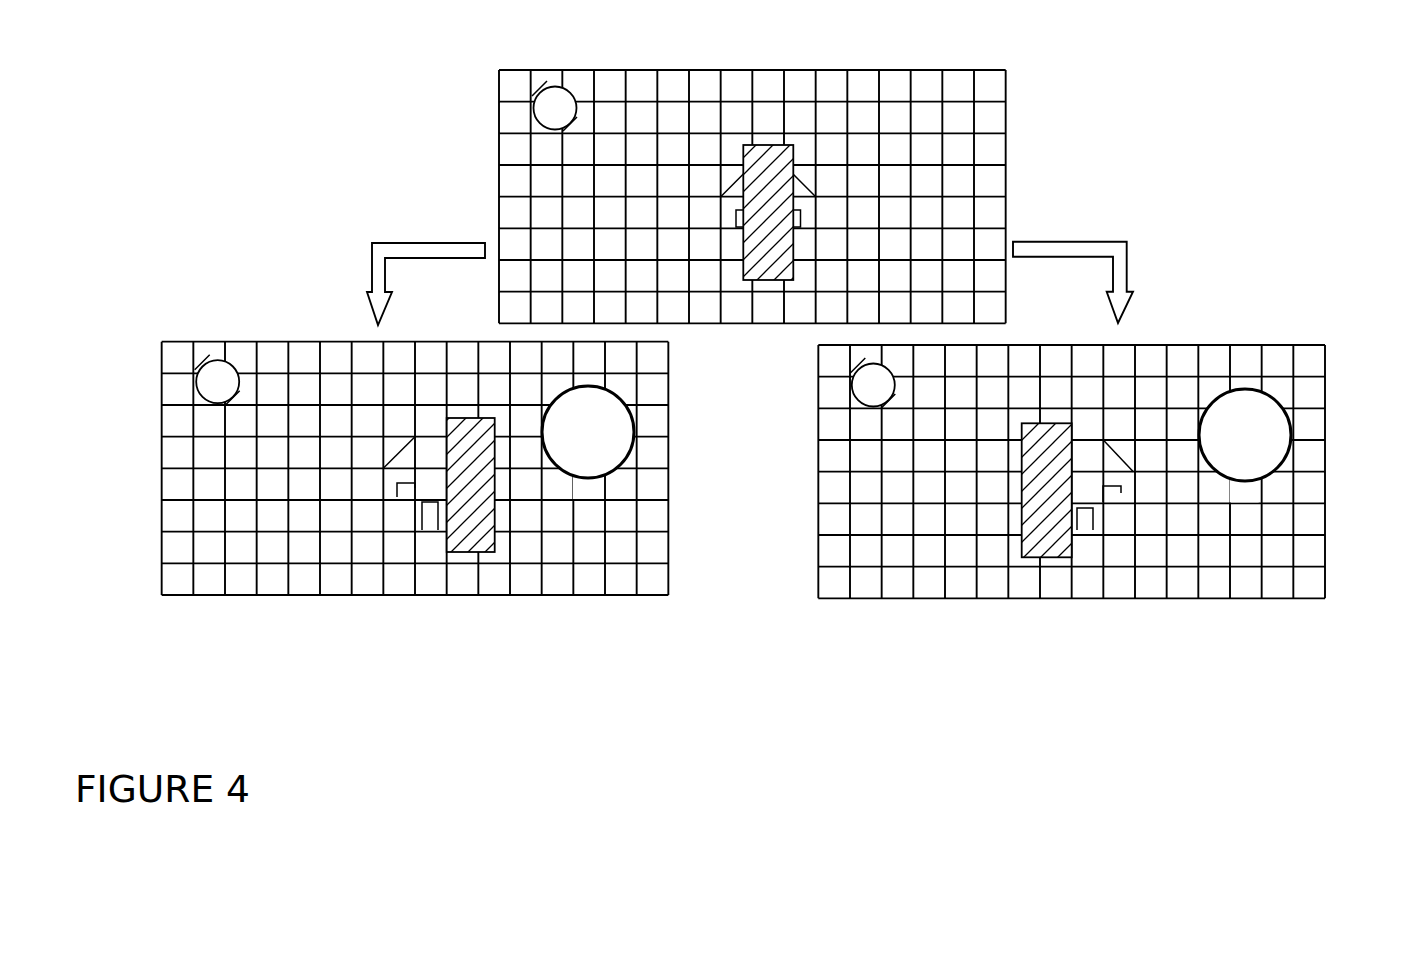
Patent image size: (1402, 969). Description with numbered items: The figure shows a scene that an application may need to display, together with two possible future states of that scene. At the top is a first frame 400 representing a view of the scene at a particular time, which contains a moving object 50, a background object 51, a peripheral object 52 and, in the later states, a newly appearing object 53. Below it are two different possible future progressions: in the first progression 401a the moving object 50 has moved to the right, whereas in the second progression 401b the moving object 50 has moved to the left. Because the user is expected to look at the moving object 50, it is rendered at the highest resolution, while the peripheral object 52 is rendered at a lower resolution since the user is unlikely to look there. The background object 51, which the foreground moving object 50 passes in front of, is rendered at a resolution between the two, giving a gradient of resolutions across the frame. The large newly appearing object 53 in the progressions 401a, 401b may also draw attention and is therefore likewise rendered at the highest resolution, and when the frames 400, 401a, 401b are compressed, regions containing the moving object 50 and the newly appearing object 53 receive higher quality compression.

The first frame 400 is at (1008, 181).
The first progression 401a is at (670, 451).
The second progression 401b is at (1328, 459).
The moving object 50 is at (758, 148).
The background object 51 is at (733, 178).
The peripheral object 52 is at (545, 244).
The newly appearing object 53 is at (916, 444).